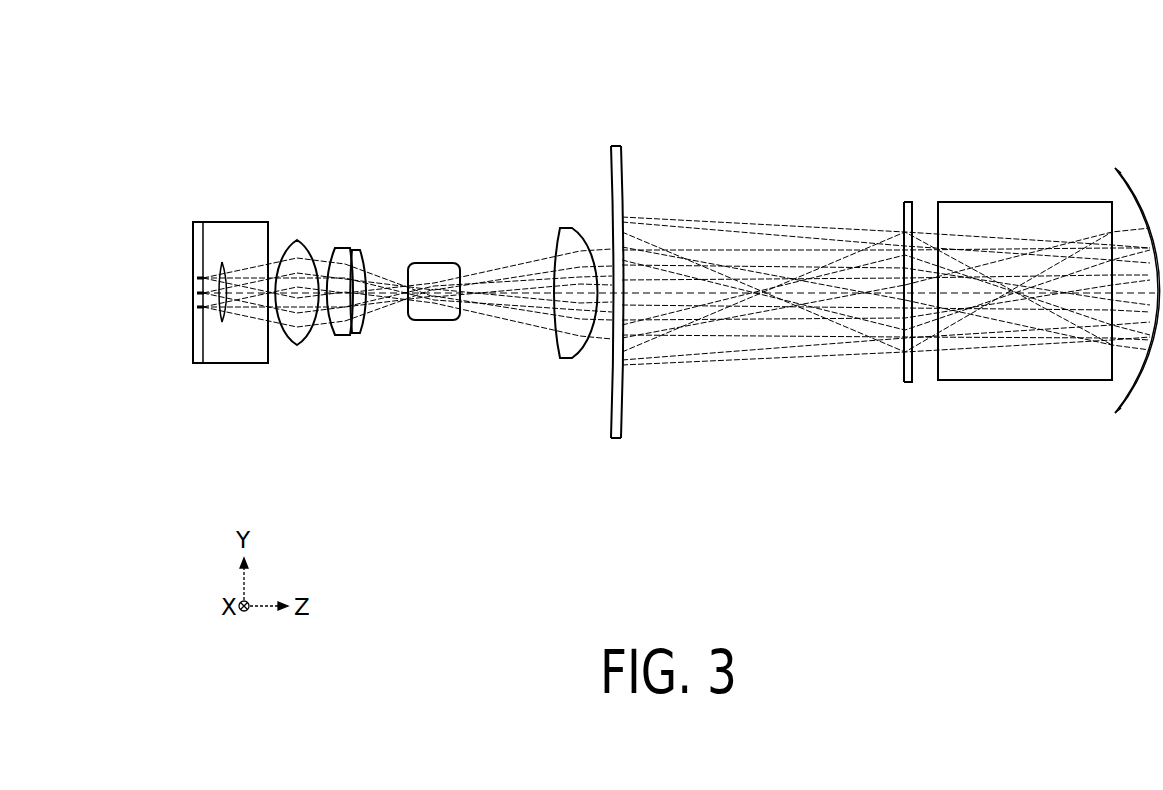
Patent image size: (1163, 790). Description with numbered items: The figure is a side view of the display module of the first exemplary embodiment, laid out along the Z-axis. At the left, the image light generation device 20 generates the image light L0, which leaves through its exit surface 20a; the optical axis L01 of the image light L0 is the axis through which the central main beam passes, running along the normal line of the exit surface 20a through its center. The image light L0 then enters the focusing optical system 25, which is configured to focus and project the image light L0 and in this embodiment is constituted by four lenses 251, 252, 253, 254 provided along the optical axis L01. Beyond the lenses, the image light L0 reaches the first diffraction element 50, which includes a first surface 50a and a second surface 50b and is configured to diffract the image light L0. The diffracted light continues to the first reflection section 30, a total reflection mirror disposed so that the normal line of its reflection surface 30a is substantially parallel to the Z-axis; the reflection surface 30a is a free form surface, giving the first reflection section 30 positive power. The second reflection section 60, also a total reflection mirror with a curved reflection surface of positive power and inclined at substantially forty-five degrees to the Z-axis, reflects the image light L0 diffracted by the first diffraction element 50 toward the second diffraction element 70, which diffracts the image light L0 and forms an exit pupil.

The image light generation device 20 is at (222, 303).
The exit surface 20a is at (207, 240).
The image light L0 is at (218, 318).
The optical axis L01 is at (295, 255).
The focusing optical system 25 is at (560, 93).
The lens 251 is at (296, 240).
The lens 252 is at (343, 248).
The lens 253 is at (437, 263).
The lens 254 is at (571, 227).
The first diffraction element 50 is at (615, 260).
The first surface 50a is at (612, 420).
The second surface 50b is at (622, 420).
The first reflection section 30 is at (873, 269).
The reflection surface 30a is at (904, 372).
The second reflection section 60 is at (1025, 202).
The second diffraction element 70 is at (1148, 190).